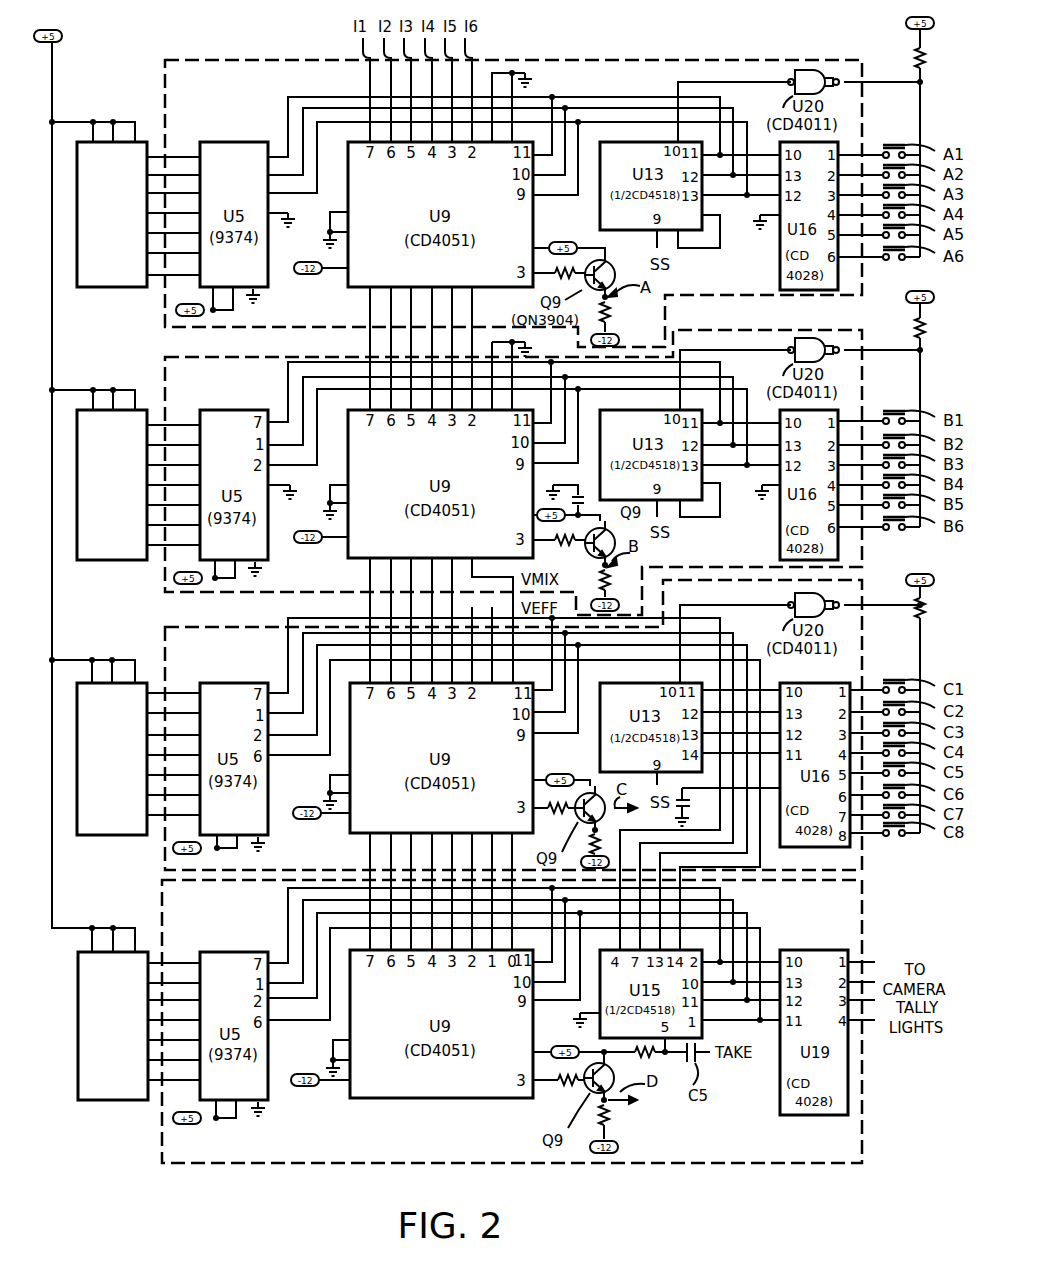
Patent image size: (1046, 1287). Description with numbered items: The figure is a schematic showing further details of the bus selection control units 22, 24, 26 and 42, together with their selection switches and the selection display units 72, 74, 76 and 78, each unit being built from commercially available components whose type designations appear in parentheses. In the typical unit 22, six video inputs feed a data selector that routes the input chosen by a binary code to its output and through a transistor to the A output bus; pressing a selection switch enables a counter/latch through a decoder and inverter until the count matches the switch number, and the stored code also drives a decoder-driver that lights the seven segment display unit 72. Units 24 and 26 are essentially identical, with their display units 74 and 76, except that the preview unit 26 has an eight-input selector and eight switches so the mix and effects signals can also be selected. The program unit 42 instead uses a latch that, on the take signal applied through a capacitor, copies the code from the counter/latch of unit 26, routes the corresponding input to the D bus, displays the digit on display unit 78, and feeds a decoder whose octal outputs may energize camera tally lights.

The selection control unit 22 is at (165, 64).
The selection control unit 24 is at (165, 370).
The preview selection unit 26 is at (163, 641).
The program selection unit 42 is at (162, 898).
The selection display unit 72 is at (140, 290).
The selection display unit 74 is at (122, 562).
The selection display unit 76 is at (128, 838).
The display unit 78 is at (108, 1103).